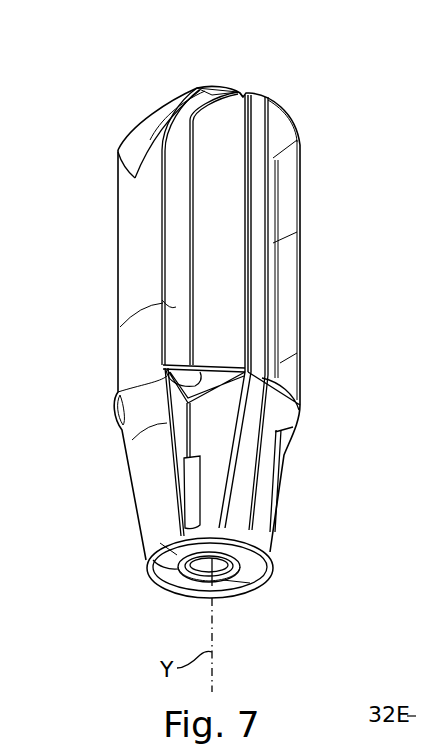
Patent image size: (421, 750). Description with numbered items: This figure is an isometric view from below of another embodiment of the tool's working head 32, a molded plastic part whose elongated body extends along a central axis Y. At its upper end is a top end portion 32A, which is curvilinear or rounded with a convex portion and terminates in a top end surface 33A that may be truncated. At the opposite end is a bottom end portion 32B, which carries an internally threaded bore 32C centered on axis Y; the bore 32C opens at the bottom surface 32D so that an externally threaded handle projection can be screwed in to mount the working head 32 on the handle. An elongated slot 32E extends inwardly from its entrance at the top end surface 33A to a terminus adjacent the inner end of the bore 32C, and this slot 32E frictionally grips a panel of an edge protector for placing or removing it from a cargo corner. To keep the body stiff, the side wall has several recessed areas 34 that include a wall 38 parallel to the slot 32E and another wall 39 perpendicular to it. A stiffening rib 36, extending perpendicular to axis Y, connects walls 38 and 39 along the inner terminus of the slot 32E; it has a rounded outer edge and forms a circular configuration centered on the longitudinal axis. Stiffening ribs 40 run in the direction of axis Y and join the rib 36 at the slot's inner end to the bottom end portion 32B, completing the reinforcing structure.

The working head 32 is at (347, 150).
The top end portion 32A is at (162, 123).
The bottom end portion 32B is at (190, 587).
The internally threaded bore 32C is at (223, 580).
The bottom surface 32D is at (165, 573).
The elongated slot 32E is at (255, 96).
The top end surface 33A is at (217, 85).
The recessed areas 34 is at (176, 307).
The stiffening rib 36 is at (166, 387).
The wall 38 is at (210, 193).
The wall 39 is at (175, 245).
The stiffening ribs 40 is at (183, 442).